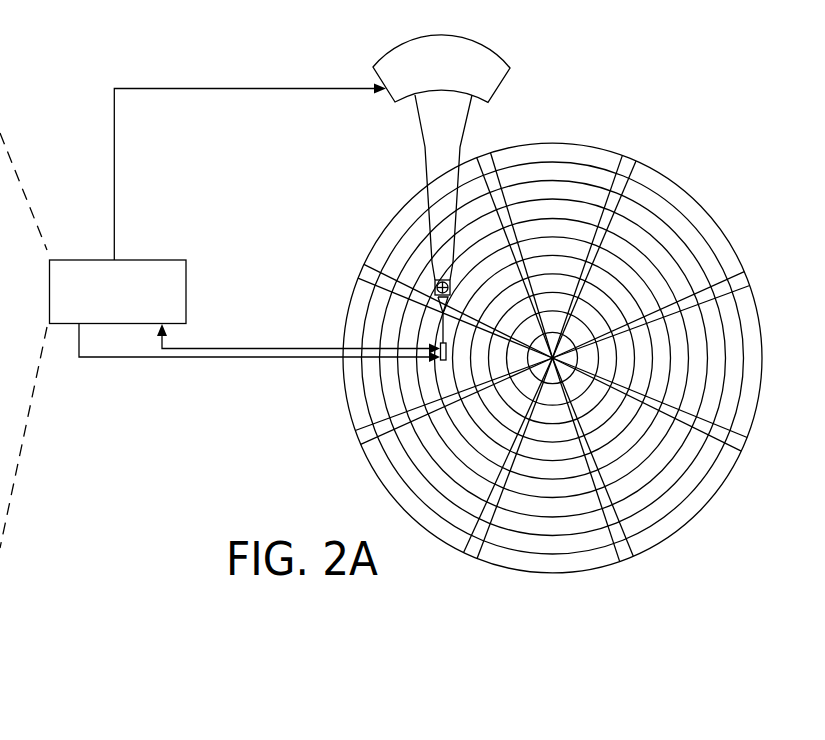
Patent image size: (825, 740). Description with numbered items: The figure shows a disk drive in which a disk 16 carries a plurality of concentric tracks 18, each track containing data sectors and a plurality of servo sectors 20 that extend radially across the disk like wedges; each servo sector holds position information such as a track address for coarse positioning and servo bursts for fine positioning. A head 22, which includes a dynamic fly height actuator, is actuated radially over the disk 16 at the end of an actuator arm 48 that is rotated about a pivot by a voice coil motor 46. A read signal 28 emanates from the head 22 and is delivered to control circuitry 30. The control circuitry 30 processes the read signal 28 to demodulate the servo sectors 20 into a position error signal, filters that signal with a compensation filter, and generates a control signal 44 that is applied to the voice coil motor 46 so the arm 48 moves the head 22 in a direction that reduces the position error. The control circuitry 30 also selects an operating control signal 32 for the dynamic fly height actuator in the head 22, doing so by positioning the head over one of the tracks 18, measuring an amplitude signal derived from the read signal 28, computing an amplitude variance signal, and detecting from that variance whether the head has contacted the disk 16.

The disk 16 is at (700, 190).
The tracks 18 is at (550, 172).
The servo sectors 20 is at (632, 168).
The head 22 is at (430, 364).
The read signal 28 is at (323, 348).
The control circuitry 30 is at (153, 260).
The operating control signal 32 is at (79, 357).
The control signal 44 is at (114, 160).
The voice coil motor (VCM) 46 is at (395, 103).
The actuator arm 48 is at (426, 162).